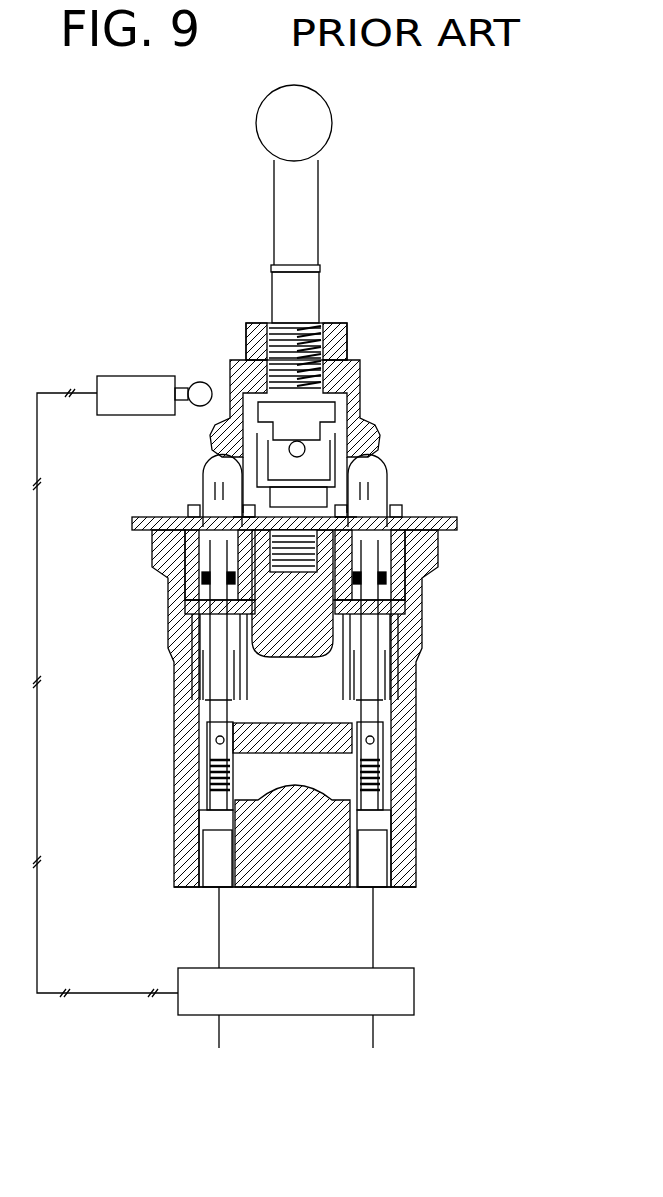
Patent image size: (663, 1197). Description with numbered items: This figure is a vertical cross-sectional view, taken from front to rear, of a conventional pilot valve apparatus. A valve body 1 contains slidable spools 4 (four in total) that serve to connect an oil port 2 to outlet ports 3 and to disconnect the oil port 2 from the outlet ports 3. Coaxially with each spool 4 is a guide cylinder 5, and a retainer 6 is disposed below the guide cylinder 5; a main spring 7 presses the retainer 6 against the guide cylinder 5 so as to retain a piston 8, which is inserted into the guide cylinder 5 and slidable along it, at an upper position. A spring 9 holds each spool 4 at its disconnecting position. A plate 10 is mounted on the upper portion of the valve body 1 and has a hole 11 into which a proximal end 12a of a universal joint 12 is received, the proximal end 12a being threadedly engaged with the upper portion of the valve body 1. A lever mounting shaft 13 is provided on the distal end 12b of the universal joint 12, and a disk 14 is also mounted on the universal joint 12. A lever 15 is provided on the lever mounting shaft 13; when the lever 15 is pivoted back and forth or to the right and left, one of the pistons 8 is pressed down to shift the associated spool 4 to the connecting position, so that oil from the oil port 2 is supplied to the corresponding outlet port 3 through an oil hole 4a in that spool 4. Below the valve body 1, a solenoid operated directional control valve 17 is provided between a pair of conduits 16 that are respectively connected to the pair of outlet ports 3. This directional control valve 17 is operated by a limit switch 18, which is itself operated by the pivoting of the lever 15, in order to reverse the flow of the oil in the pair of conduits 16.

The valve body 1 is at (425, 640).
The oil port 2 is at (272, 728).
The outlet ports 3 is at (210, 848).
The spools 4 is at (205, 735).
The oil hole 4a is at (210, 778).
The guide cylinder 5 is at (172, 548).
The retainer 6 is at (175, 605).
The main spring 7 is at (175, 640).
The piston 8 is at (208, 474).
The spring 9 is at (200, 700).
The plate 10 is at (444, 517).
The hole 11 is at (235, 520).
The universal joint 12 is at (305, 446).
The proximal end 12a is at (292, 650).
The distal end 12b is at (318, 412).
The lever mounting shaft 13 is at (322, 325).
The disk 14 is at (218, 440).
The lever 15 is at (312, 216).
The conduits 16 is at (219, 940).
The solenoid operated directional control valve 17 is at (414, 980).
The limit switch 18 is at (113, 408).